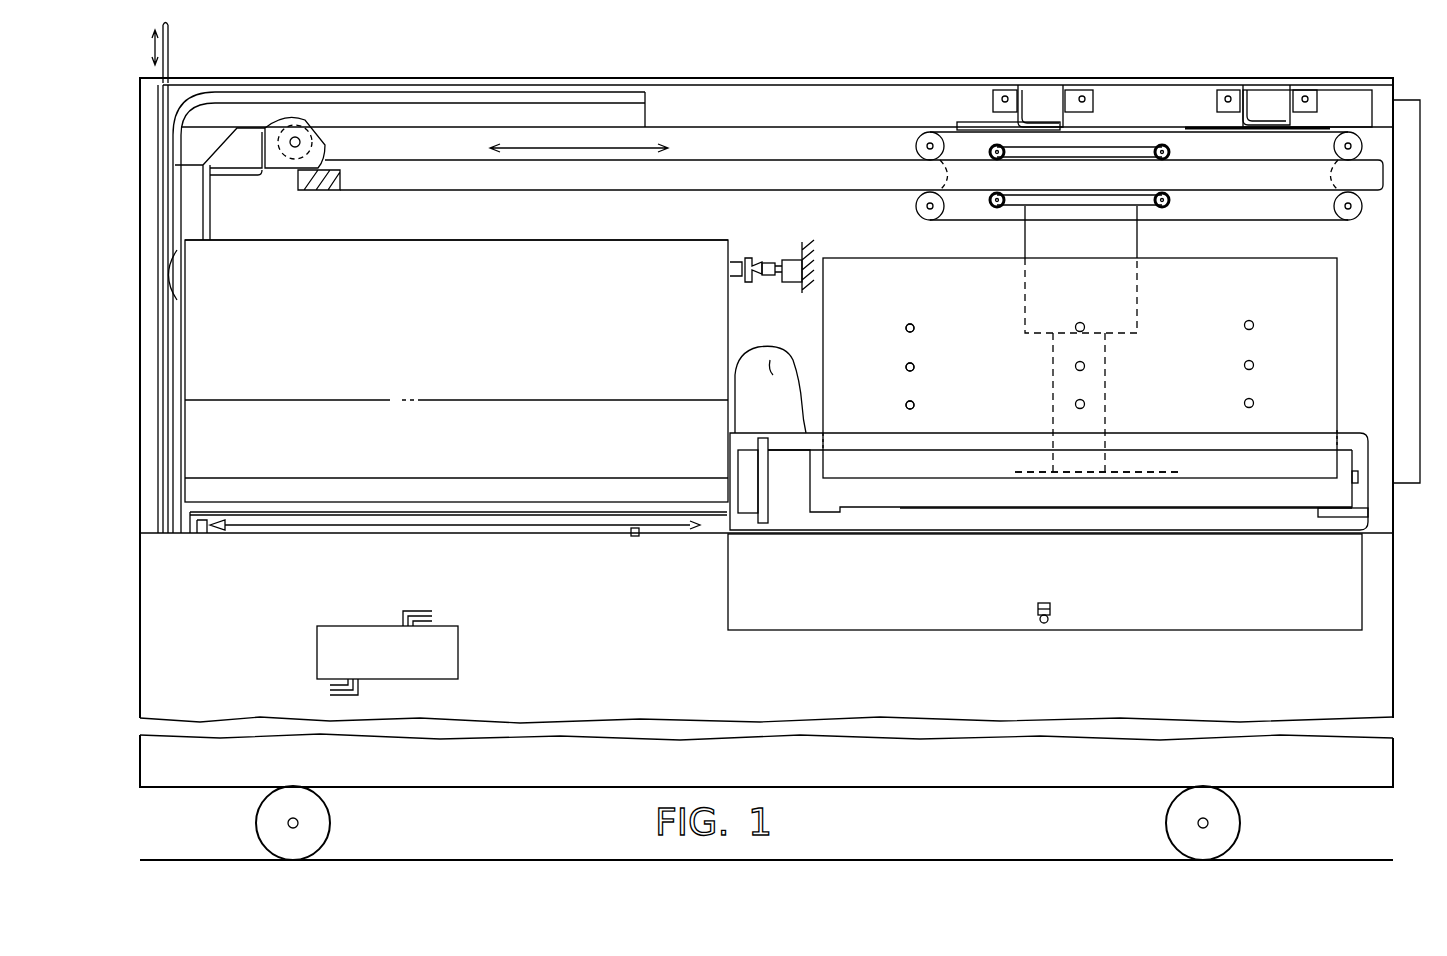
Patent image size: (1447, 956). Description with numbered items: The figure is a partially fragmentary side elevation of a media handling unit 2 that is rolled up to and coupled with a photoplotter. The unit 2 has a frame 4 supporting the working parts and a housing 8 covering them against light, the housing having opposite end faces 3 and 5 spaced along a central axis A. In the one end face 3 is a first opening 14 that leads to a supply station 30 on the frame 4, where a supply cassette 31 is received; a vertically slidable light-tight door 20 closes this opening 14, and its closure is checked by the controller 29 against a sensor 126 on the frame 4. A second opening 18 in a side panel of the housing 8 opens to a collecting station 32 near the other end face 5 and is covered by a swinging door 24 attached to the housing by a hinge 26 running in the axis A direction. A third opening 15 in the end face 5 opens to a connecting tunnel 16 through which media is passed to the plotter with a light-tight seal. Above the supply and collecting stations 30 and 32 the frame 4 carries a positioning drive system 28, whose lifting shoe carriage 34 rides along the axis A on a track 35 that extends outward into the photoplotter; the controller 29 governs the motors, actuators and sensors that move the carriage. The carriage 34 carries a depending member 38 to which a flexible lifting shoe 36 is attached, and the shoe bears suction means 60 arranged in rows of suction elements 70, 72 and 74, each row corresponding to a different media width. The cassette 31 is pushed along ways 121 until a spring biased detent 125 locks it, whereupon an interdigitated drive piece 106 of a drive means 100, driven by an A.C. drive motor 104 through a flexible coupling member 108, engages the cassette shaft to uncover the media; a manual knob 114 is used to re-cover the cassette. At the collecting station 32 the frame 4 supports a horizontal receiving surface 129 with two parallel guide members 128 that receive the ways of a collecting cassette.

The media handling unit 2 is at (128, 515).
The end face 3 is at (158, 380).
The frame 4 is at (156, 621).
The other end face 5 is at (1395, 418).
The housing 8 is at (773, 365).
The first opening 14 is at (163, 160).
The third opening 15 is at (1405, 213).
The connecting tunnel 16 is at (1400, 300).
The second opening 18 is at (855, 457).
The light-tight door 20 is at (172, 65).
The swinging door 24 is at (907, 620).
The hinge 26 is at (862, 532).
The positioning drive system 28 is at (440, 130).
The controller 29 is at (450, 655).
The supply station 30 is at (393, 227).
The supply cassette 31 is at (545, 240).
The collecting station 32 is at (1345, 430).
The lifting shoe carriage 34 is at (1160, 146).
The track 35 is at (795, 162).
The lifting shoe 36 is at (897, 258).
The depending member 38 is at (1138, 238).
The suction means 60 is at (925, 313).
The row of suction elements 70 is at (914, 331).
The row of suction elements 72 is at (914, 370).
The row of suction elements 74 is at (914, 408).
The drive means 100 is at (800, 243).
The A.C. drive motor 104 is at (792, 280).
The drive piece 106 is at (757, 258).
The flexible coupling member 108 is at (767, 277).
The manual knob 114 is at (183, 297).
The ways 121 is at (285, 522).
The spring biased detent 125 is at (636, 537).
The sensor 126 is at (188, 535).
The guide members 128 is at (900, 511).
The receiving surface 129 is at (1102, 510).
The central axis A is at (608, 150).